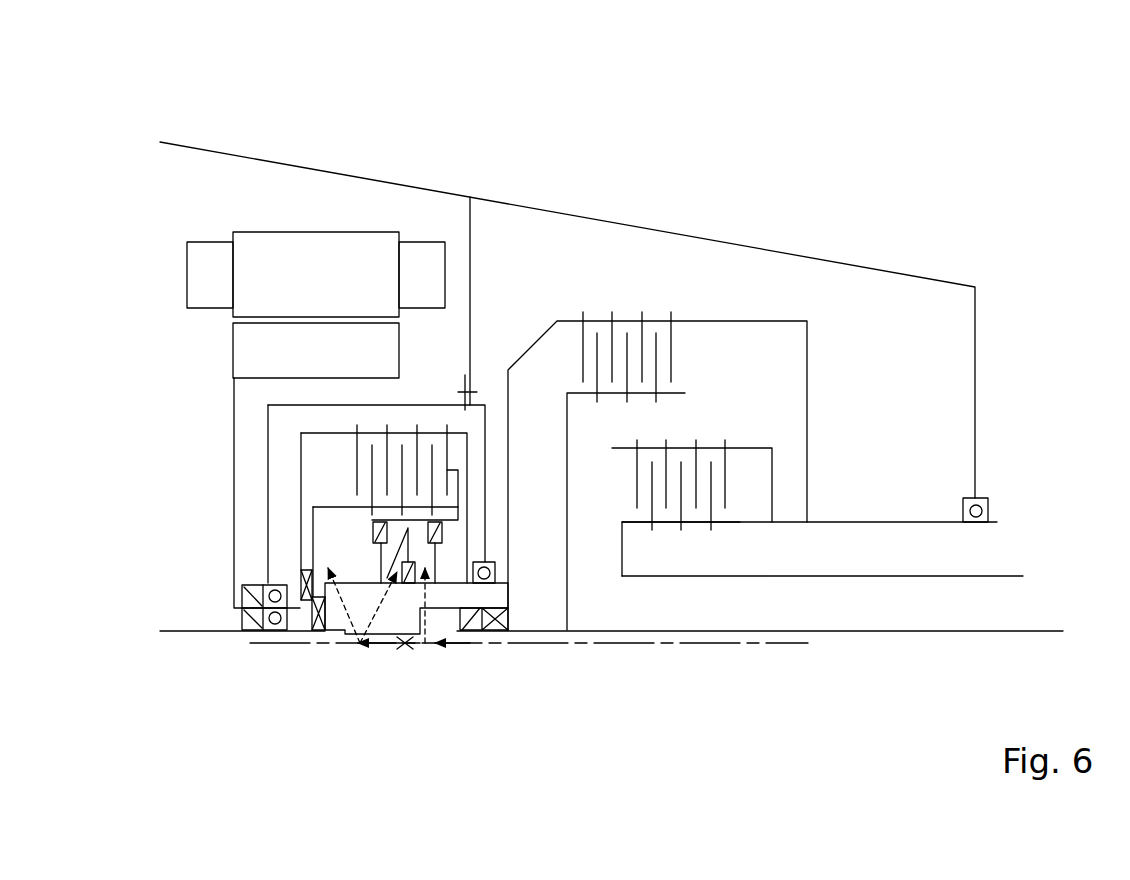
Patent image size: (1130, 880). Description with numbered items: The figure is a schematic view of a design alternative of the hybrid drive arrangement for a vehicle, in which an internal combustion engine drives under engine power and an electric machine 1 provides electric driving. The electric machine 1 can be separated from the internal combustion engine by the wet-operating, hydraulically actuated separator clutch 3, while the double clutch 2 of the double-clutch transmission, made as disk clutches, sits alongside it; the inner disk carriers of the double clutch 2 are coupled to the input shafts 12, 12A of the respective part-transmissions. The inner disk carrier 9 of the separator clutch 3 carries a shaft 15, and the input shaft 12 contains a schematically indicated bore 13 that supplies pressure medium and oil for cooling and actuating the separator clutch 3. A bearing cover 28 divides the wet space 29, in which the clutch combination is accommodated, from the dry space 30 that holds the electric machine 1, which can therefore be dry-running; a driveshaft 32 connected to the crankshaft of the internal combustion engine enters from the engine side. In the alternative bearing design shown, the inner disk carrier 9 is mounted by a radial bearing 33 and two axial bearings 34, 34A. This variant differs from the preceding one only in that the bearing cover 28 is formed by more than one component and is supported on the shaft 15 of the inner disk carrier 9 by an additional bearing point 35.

The electric machine 1 is at (298, 303).
The double clutch 2 is at (683, 437).
The separator clutch 3 is at (405, 425).
The inner disk carrier 9 is at (312, 528).
The input shaft 12 is at (1027, 631).
The input shaft 12A is at (990, 576).
The bore 13 is at (548, 643).
The shaft 15 is at (448, 583).
The bearing cover 28 is at (268, 453).
The wet space 29 is at (573, 253).
The dry space 30 is at (422, 217).
The driveshaft 32 is at (210, 632).
The radial bearing 33 is at (495, 630).
The axial bearing 34 is at (312, 603).
The axial bearing 34A is at (321, 605).
The additional bearing point 35 is at (499, 579).